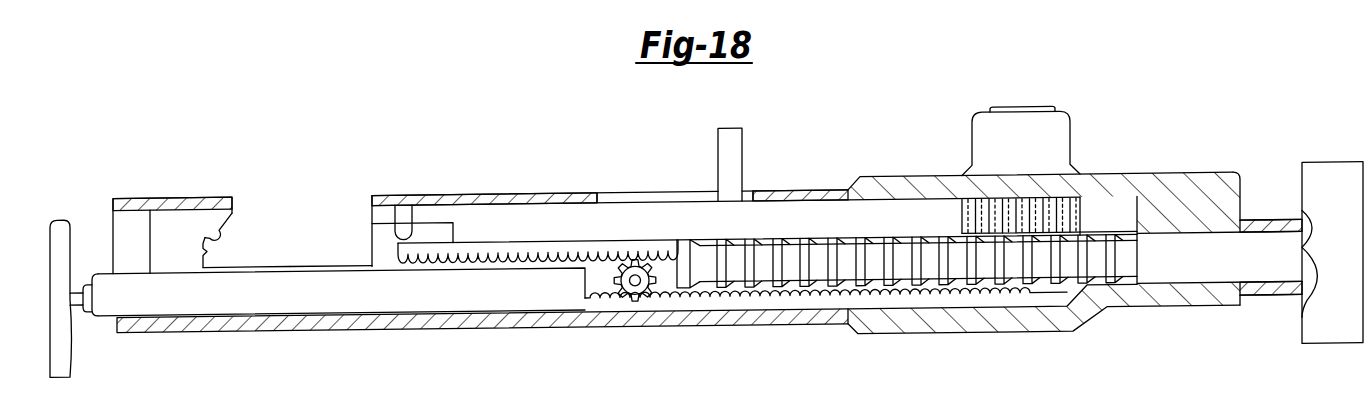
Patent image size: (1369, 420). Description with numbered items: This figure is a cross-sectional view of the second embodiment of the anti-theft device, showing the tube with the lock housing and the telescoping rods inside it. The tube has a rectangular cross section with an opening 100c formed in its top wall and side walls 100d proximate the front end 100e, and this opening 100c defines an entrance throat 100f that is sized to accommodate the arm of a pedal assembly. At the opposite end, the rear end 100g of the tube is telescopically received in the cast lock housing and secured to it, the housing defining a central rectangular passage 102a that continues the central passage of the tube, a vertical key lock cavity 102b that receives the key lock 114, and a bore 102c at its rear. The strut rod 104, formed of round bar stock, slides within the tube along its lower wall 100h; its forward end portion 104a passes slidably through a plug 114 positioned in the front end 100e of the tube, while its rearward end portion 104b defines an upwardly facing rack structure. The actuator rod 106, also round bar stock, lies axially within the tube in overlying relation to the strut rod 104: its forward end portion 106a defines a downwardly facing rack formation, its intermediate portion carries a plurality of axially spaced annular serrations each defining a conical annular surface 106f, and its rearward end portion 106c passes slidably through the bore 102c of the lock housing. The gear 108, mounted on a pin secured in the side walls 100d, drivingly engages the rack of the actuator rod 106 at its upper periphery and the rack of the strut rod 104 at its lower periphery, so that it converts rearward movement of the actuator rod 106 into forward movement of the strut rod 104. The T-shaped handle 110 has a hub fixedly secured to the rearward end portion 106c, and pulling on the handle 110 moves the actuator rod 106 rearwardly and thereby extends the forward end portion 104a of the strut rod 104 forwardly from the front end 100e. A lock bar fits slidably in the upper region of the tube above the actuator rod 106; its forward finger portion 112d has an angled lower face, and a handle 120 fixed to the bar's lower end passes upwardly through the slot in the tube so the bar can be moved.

The opening 100c is at (282, 243).
The side walls 100d is at (203, 249).
The front end 100e is at (133, 197).
The entrance throat 100f is at (244, 247).
The rear end 100g is at (209, 236).
The lower wall 100h is at (450, 323).
The central rectangular passage 102a is at (907, 211).
The vertical key lock cavity 102b is at (370, 208).
The bore 102c is at (1185, 249).
The strut rod 104 is at (425, 301).
The forward end portion 104a is at (115, 299).
The rearward end portion 104b is at (740, 316).
The actuator rod 106 is at (1275, 223).
The forward end portion 106a is at (535, 246).
The rearward end portion 106c is at (1240, 283).
The conical annular surface 106f is at (807, 283).
The gear 108 is at (623, 288).
The handle 110 is at (1325, 338).
The forward finger portion 112d is at (465, 203).
The key lock 114 is at (128, 234).
The handle 120 is at (730, 176).